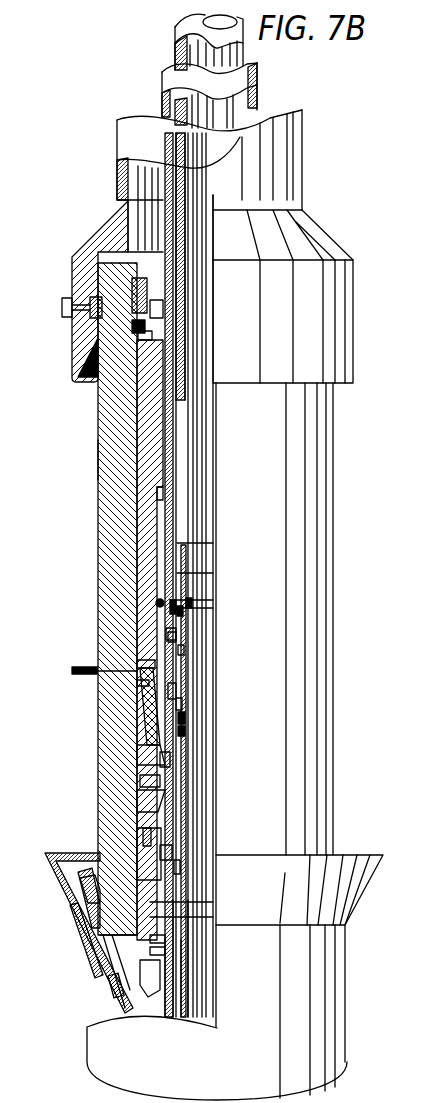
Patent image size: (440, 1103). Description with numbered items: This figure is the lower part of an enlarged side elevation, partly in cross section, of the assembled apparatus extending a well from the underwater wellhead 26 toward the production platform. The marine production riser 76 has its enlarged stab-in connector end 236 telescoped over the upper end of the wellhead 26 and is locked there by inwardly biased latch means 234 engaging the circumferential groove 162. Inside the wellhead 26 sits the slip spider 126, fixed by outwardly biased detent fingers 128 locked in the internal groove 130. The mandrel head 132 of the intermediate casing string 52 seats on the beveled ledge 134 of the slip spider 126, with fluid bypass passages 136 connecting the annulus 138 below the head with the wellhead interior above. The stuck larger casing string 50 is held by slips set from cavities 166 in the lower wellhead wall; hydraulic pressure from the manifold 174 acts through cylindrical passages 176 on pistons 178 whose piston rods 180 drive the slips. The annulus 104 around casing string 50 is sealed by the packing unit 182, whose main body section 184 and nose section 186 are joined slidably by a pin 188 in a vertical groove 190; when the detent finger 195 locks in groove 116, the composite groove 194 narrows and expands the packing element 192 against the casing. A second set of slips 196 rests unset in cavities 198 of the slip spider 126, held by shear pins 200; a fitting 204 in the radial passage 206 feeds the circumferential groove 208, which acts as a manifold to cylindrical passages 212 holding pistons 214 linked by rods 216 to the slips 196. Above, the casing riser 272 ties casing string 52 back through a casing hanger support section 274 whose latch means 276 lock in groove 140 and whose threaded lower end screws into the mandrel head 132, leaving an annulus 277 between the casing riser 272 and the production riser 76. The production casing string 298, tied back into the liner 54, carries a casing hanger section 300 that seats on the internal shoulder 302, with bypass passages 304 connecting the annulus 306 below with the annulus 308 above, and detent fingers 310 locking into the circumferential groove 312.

The underwater wellhead 26 is at (108, 457).
The 10¾″ casing string 50 is at (165, 1017).
The 7⅝″ casing string 52 is at (177, 1017).
The 5½″ liner 54 is at (190, 987).
The marine production riser 76 is at (123, 147).
The annulus 104 is at (167, 972).
The circumferential groove 116 is at (177, 867).
The slip spider 126 is at (140, 487).
The detent fingers 128 is at (143, 333).
The circumferential internal groove 130 is at (145, 323).
The mandrel head 132 is at (160, 632).
The beveled circumferential ledge 134 is at (180, 703).
The fluid bypass passages 136 is at (177, 688).
The annulus 138 is at (167, 760).
The circumferential groove 140 is at (165, 610).
The circumferential groove 162 is at (102, 318).
The cavities 166 is at (105, 1015).
The manifold 174 is at (82, 903).
The cylindrical passages 176 is at (103, 947).
The piston 178 is at (110, 988).
The piston rod 180 is at (123, 997).
The packing unit 182 is at (140, 833).
The main body section 184 is at (178, 852).
The nose section 186 is at (143, 962).
The pin 188 is at (177, 903).
The vertical groove 190 is at (182, 917).
The expandable packing element 192 is at (180, 940).
The composite groove 194 is at (180, 953).
The detent finger 195 is at (143, 873).
The slips 196 is at (147, 755).
The cavities 198 is at (147, 783).
The shear pins 200 is at (145, 798).
The fitting 204 is at (72, 671).
The radial passage 206 is at (140, 684).
The circumferential groove 208 is at (137, 667).
The cylindrical passages 212 is at (182, 717).
The pistons 214 is at (152, 710).
The rods 216 is at (182, 730).
The latch means 234 is at (97, 302).
The stab-in connector end 236 is at (334, 324).
The 8⅝″ casing riser 272 is at (249, 78).
The casing hanger support section 274 is at (167, 623).
The latch means 276 is at (157, 605).
The annulus 277 is at (160, 318).
The production casing string 298 is at (182, 650).
The casing hanger section 300 is at (200, 582).
The internal shoulder 302 is at (163, 617).
The fluid bypass passages 304 is at (170, 637).
The annulus 306 is at (187, 812).
The annulus 308 is at (140, 405).
The detent fingers 310 is at (190, 603).
The circumferential groove 312 is at (182, 608).